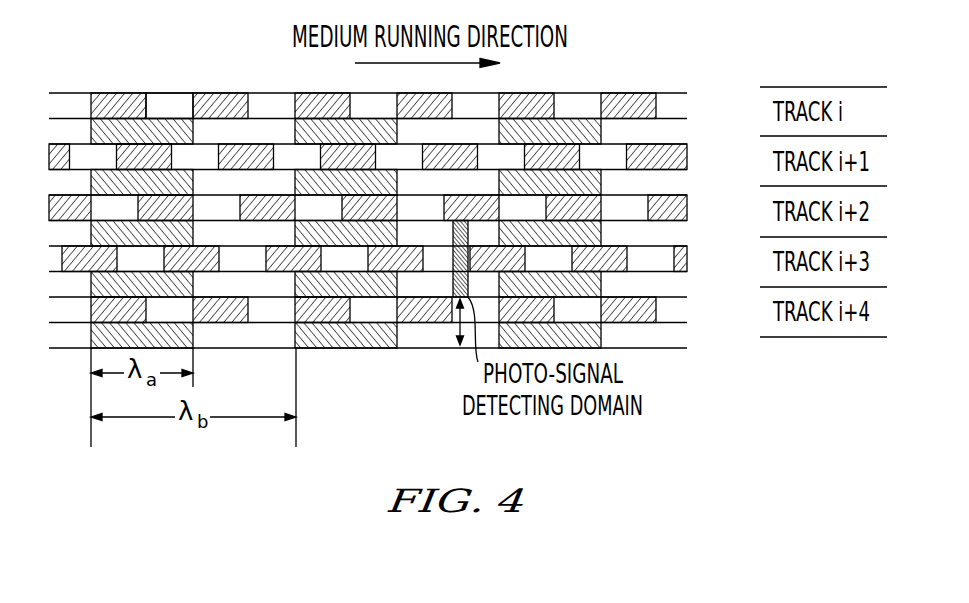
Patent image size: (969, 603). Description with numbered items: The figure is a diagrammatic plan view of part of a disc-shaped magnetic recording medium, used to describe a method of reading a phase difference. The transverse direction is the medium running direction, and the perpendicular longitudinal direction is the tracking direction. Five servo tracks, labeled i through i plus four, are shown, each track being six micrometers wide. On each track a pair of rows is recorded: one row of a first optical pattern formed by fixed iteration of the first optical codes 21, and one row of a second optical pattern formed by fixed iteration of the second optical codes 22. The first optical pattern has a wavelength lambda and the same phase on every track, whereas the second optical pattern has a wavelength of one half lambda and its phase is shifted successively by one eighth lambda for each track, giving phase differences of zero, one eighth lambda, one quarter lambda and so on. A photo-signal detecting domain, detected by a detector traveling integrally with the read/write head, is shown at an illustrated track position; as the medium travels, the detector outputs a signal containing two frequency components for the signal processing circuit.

The first optical codes 21 is at (164, 120).
The second optical codes 22 is at (116, 93).